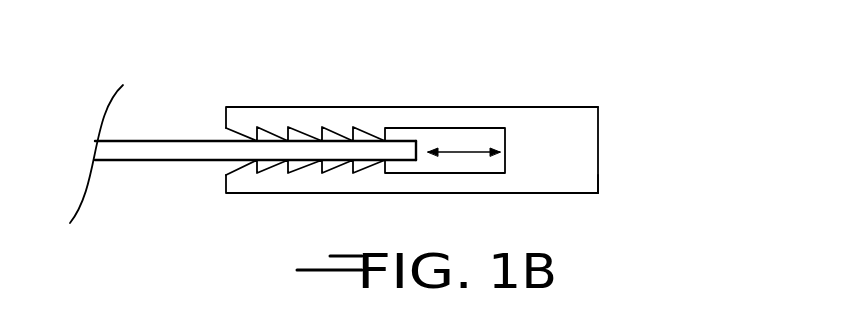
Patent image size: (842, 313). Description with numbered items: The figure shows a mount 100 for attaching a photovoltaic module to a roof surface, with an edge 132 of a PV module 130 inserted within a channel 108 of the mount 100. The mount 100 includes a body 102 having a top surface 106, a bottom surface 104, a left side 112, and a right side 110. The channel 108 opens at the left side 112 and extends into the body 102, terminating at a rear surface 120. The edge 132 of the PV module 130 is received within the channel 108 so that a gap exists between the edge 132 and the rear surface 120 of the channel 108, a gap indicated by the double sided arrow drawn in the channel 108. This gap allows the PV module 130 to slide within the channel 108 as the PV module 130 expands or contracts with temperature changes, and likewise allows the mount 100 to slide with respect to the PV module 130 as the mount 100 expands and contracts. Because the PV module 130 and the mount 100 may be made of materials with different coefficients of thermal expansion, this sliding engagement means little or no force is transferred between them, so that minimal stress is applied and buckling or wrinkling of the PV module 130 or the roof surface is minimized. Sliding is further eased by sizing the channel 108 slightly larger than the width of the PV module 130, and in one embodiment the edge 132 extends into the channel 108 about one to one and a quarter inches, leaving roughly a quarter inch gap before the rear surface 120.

The mount 100 is at (402, 157).
The body 102 is at (585, 158).
The bottom surface 104 is at (567, 191).
The top surface 106 is at (416, 157).
The channel 108 is at (223, 139).
The right side 110 is at (600, 189).
The left side 112 is at (222, 181).
The rear surface 120 is at (502, 133).
The PV module 130 is at (280, 159).
The edge 132 is at (420, 152).